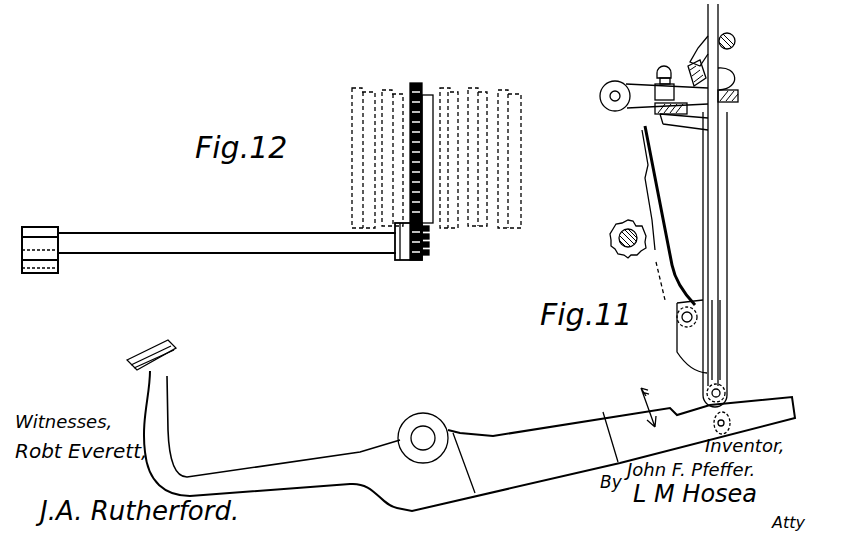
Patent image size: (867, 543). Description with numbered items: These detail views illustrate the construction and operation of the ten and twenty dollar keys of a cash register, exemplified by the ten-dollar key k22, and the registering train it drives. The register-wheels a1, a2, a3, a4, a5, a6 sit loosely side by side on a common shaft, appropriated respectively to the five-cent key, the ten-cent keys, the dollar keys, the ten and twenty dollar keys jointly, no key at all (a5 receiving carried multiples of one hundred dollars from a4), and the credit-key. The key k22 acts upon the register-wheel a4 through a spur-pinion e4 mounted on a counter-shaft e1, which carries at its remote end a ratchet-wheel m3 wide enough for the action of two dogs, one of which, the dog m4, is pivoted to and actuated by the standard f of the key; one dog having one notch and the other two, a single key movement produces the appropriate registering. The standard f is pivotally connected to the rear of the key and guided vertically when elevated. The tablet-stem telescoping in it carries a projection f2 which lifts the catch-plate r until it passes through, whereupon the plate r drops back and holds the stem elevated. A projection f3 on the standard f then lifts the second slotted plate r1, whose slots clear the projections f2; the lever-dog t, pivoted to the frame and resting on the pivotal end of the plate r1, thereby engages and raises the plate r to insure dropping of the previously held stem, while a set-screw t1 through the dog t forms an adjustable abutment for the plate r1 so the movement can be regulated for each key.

In FIG. 12, the register-wheel a1 is at (509, 151).
In FIG. 12, the register-wheel a2 is at (477, 148).
In FIG. 12, the register-wheel a3 is at (449, 149).
In FIG. 12, the register-wheel a4 is at (421, 165).
In FIG. 12, the register-wheel a5 is at (392, 148).
In FIG. 12, the register-wheel a6 is at (363, 149).
In FIG. 12, the counter-shaft e1 is at (227, 234).
In FIG. 12, the spur-pinion e4 is at (416, 252).
In FIG. 12, the ratchet-wheel m3 is at (40, 240).
In FIG. 11, the ratchet-wheel m3 is at (618, 224).
In FIG. 11, the dog m4 is at (674, 249).
In FIG. 11, the standard f is at (732, 222).
In FIG. 11, the stem projection f2 is at (696, 56).
In FIG. 11, the standard projection f3 is at (684, 130).
In FIG. 11, the catch-plate r is at (733, 36).
In FIG. 11, the second slotted plate r1 is at (738, 104).
In FIG. 11, the lever-dog t is at (640, 90).
In FIG. 11, the set-screw t1 is at (664, 74).
In FIG. 11, the ten-dollar key k22 is at (461, 425).